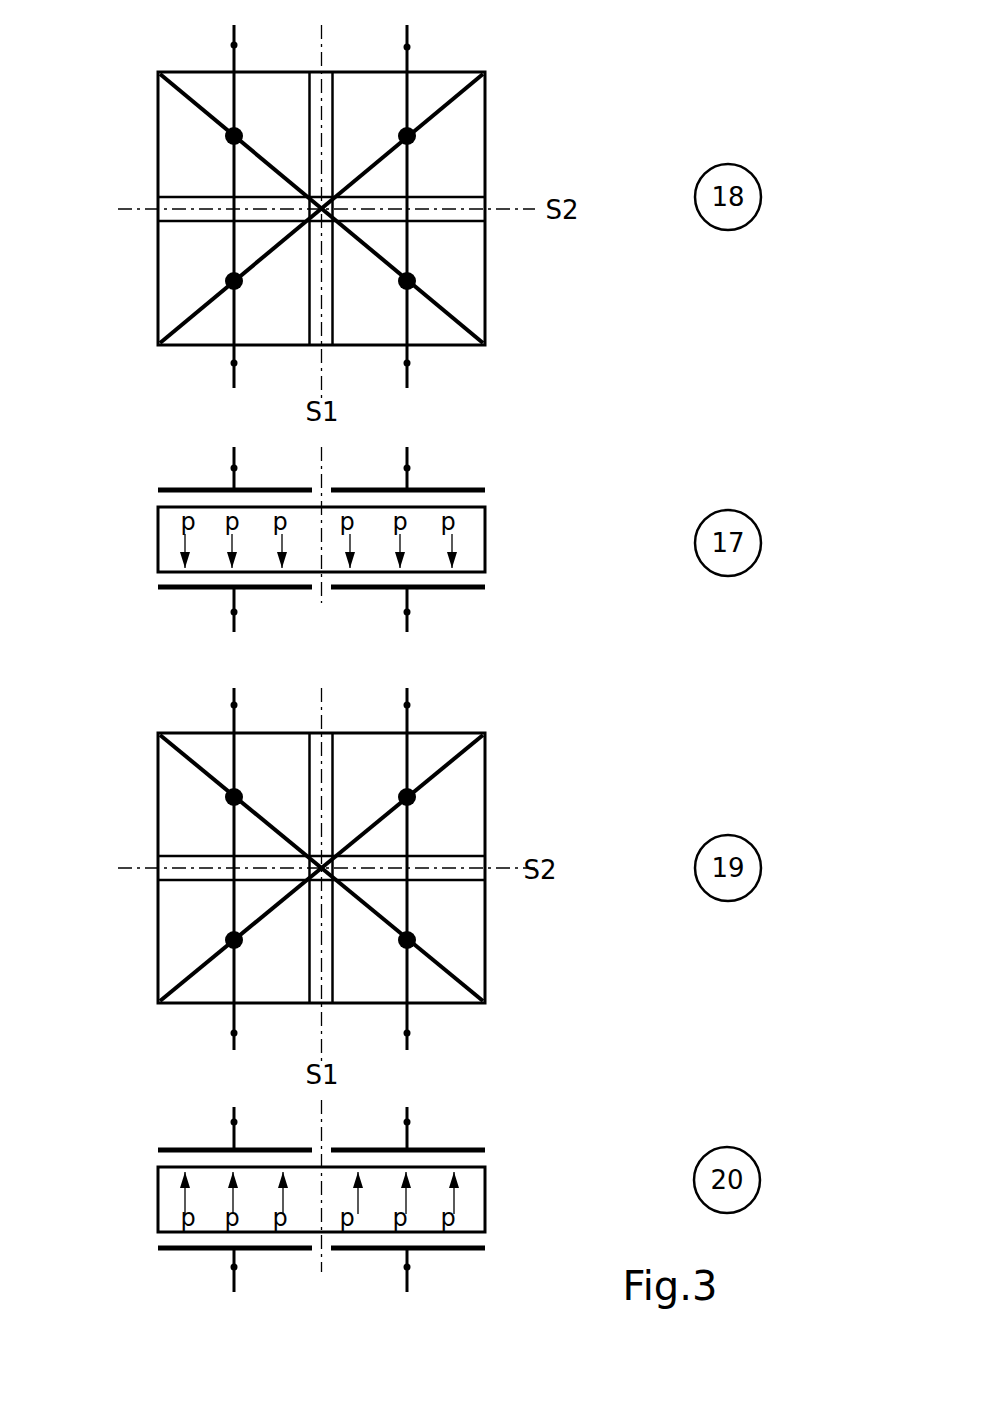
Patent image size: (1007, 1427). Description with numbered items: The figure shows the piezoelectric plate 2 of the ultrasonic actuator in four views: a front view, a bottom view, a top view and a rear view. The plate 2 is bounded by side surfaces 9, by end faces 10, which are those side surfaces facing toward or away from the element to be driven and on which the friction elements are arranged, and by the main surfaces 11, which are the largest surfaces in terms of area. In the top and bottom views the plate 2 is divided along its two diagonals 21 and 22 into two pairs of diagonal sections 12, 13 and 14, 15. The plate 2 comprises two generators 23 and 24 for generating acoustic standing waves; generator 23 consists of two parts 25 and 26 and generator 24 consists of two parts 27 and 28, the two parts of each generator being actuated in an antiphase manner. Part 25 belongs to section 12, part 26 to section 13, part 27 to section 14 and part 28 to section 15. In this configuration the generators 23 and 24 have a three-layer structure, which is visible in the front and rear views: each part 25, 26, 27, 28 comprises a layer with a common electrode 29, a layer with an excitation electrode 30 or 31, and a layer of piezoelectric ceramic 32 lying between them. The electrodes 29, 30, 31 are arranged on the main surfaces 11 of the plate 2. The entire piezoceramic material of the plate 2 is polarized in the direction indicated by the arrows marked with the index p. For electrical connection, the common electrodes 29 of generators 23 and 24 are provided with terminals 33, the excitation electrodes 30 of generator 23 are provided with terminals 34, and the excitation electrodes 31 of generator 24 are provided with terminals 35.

The piezoelectric plate 2 is at (572, 152).
The side surfaces 9 is at (158, 240).
The end faces 10 is at (186, 71).
The main surfaces 11 is at (443, 173).
The diagonal section 12 is at (192, 280).
The diagonal section 13 is at (452, 157).
The diagonal section 14 is at (455, 283).
The diagonal section 15 is at (188, 155).
The diagonal 21 is at (278, 242).
The diagonal 22 is at (367, 242).
The generator 23 is at (435, 93).
The generator 24 is at (256, 92).
The part of generator 25 is at (213, 315).
The part of generator 26 is at (442, 128).
The part of generator 27 is at (432, 318).
The part of generator 28 is at (197, 131).
The common electrode 29 is at (403, 247).
The excitation electrode 30 is at (182, 252).
The excitation electrode 31 is at (457, 255).
The piezoelectric ceramic layer 32 is at (165, 590).
The terminals 33 is at (232, 45).
The terminals 34 is at (236, 365).
The terminals 35 is at (409, 365).